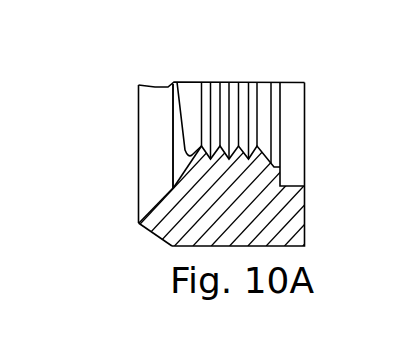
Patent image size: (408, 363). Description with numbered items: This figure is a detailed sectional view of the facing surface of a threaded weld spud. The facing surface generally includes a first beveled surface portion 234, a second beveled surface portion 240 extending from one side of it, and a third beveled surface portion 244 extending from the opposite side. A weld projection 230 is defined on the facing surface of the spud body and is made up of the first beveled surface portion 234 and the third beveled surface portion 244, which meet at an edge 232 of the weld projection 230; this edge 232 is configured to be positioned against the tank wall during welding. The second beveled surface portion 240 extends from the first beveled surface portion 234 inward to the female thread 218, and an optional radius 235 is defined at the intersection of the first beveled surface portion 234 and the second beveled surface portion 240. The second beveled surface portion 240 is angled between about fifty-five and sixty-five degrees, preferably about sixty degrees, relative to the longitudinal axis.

The female thread 218 is at (247, 152).
The weld projection 230 is at (153, 204).
The edge 232 is at (138, 223).
The first beveled surface portion 234 is at (158, 198).
The radius 235 is at (172, 188).
The second beveled surface portion 240 is at (182, 140).
The third beveled surface portion 244 is at (158, 236).